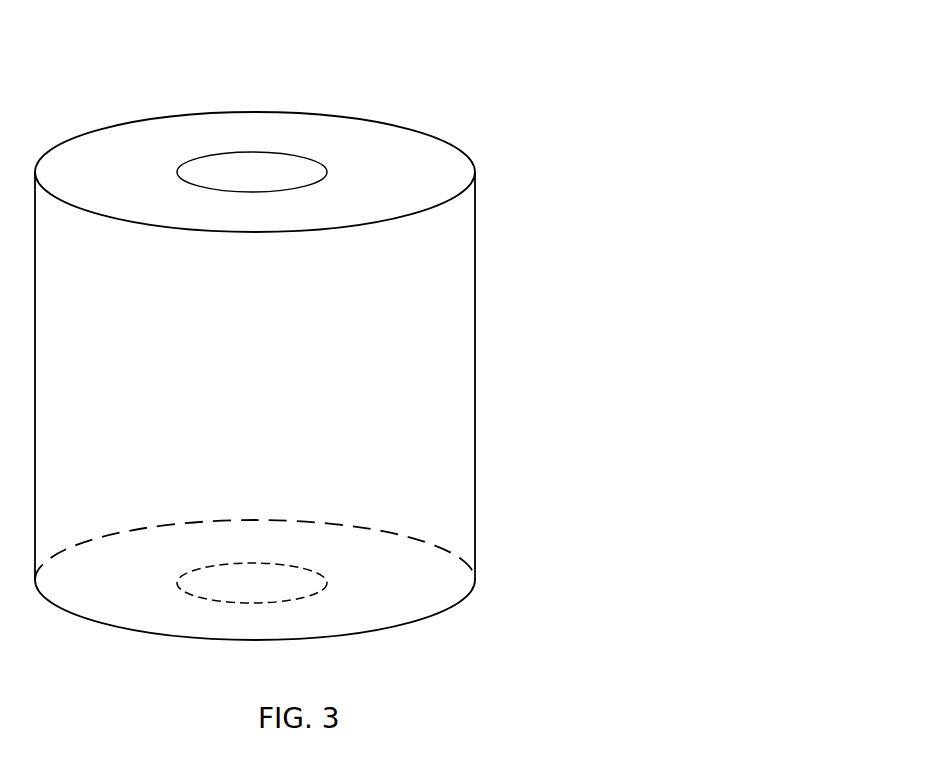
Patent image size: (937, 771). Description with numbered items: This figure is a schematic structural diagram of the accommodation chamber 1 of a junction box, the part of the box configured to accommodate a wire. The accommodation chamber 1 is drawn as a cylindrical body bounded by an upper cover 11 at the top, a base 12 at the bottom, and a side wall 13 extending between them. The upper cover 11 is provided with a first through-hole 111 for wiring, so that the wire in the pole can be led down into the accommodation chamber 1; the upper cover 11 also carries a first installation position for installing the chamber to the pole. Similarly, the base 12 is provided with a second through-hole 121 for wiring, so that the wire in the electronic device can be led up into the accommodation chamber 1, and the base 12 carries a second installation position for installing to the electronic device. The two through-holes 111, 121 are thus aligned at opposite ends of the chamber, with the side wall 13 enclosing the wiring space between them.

The accommodation chamber 1 is at (314, 329).
The upper cover 11 is at (314, 148).
The first through-hole 111 is at (385, 128).
The base 12 is at (313, 538).
The second through-hole 121 is at (384, 543).
The side wall 13 is at (314, 376).